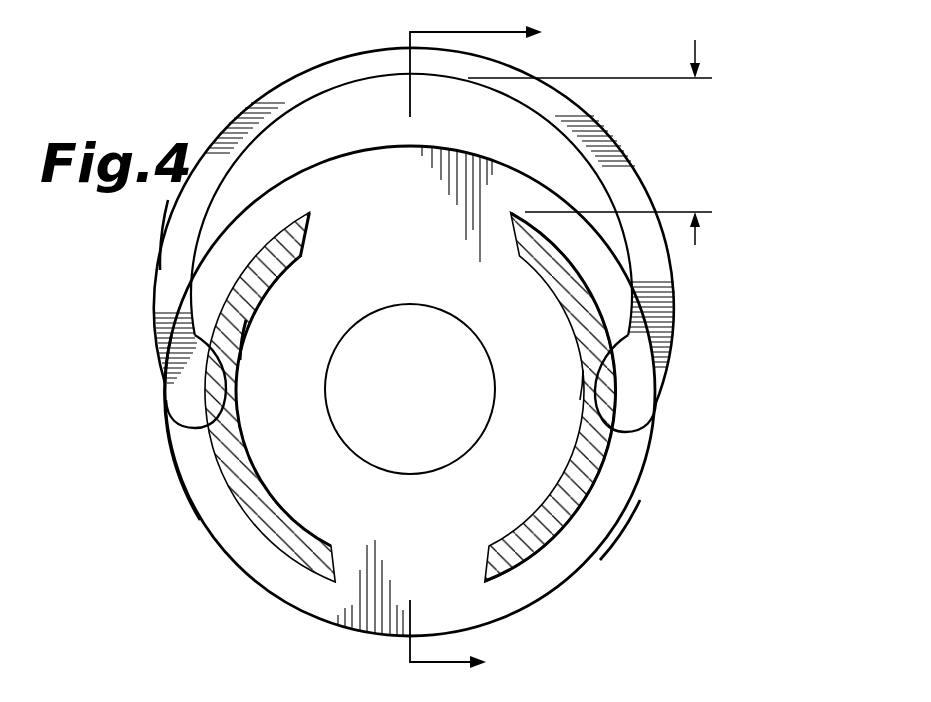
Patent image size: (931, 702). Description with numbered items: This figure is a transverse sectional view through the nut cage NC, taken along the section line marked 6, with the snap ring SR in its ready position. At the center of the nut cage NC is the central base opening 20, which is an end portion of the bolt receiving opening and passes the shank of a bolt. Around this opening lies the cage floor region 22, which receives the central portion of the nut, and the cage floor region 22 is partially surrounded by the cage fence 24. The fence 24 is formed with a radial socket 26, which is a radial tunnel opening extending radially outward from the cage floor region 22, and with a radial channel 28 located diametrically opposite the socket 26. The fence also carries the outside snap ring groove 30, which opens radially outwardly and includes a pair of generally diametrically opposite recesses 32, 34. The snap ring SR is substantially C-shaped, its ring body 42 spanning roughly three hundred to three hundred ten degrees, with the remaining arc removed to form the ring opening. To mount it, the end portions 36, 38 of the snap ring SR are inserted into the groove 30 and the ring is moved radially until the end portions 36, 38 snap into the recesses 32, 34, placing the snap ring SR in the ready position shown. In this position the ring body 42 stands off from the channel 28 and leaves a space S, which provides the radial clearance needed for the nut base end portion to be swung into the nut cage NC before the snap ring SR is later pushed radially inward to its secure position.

The central base opening 20 is at (462, 428).
The cage floor region 22 is at (297, 490).
The cage fence 24 is at (550, 397).
The radial socket 26 is at (370, 607).
The radial channel 28 is at (372, 182).
The snap ring groove 30 is at (220, 502).
The recess 32 is at (206, 378).
The recess 34 is at (607, 388).
The end portion of the snap ring 36 is at (190, 426).
The end portion of the snap ring 38 is at (633, 431).
The ring body 42 is at (310, 78).
The snap ring SR is at (170, 235).
The nut cage NC is at (626, 527).
The space S is at (690, 148).
The section line 6- 6 is at (488, 355).